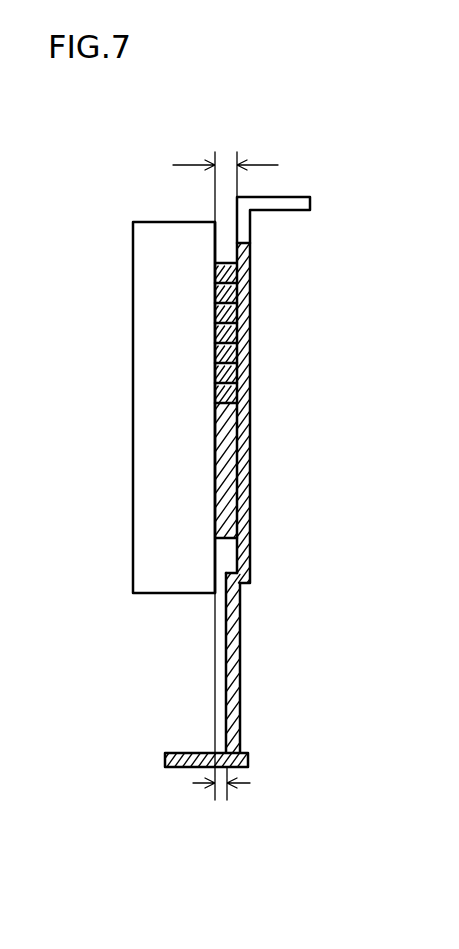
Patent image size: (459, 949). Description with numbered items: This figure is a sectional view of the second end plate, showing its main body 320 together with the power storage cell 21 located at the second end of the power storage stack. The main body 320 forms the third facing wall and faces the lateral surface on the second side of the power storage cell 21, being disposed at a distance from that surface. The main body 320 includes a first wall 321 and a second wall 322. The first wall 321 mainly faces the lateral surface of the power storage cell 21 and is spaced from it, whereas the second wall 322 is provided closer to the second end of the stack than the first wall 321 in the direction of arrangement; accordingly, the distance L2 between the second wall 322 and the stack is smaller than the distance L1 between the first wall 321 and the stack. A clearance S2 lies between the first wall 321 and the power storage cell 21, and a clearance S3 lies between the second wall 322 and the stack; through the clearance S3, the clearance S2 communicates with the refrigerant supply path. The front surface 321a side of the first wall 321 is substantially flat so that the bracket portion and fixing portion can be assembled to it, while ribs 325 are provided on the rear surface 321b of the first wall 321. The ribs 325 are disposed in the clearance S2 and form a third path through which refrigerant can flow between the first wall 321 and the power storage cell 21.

The power storage cell 21 is at (172, 222).
The main body 320 is at (343, 148).
The first wall 321 is at (251, 404).
The front surface 321a is at (225, 478).
The rear surface 321b is at (222, 482).
The second wall 322 is at (241, 672).
The ribs 325 is at (226, 263).
The clearance S2 is at (228, 557).
The clearance S3 is at (220, 583).
The distance L1 is at (225, 176).
The distance L2 is at (221, 793).